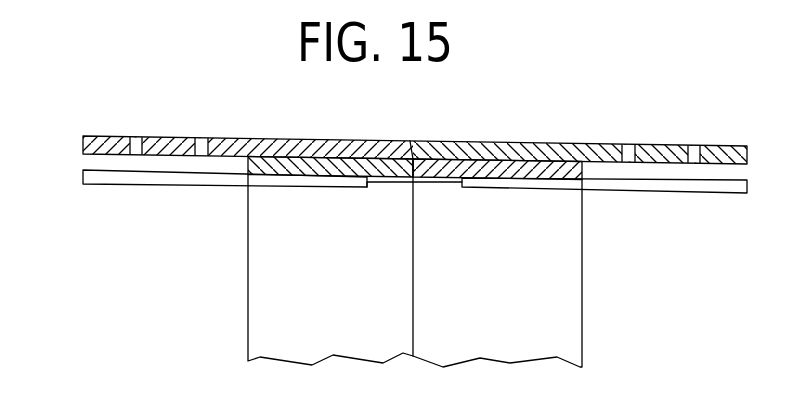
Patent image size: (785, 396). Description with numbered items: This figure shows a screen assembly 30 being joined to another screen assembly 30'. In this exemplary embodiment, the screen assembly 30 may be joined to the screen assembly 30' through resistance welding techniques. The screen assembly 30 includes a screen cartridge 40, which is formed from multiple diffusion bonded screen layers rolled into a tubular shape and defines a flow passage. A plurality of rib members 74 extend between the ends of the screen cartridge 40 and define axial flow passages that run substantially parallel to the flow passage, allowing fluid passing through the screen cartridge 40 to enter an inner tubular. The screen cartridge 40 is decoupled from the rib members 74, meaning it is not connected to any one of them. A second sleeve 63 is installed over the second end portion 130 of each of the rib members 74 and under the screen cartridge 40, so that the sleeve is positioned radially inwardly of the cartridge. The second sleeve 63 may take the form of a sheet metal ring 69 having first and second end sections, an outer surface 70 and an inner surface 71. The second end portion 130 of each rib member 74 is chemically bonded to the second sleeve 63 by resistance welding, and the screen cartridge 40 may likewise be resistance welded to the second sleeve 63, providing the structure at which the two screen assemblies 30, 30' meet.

The screen assembly 30 is at (221, 103).
The screen assembly 30' is at (580, 122).
The screen cartridge 40 is at (167, 138).
The outer surface 70 is at (410, 141).
The second end portion 130 is at (293, 182).
The rib members 74 is at (125, 185).
The sheet metal ring 69 is at (248, 223).
The second sleeve 63 is at (222, 250).
The inner surface 71 is at (263, 258).